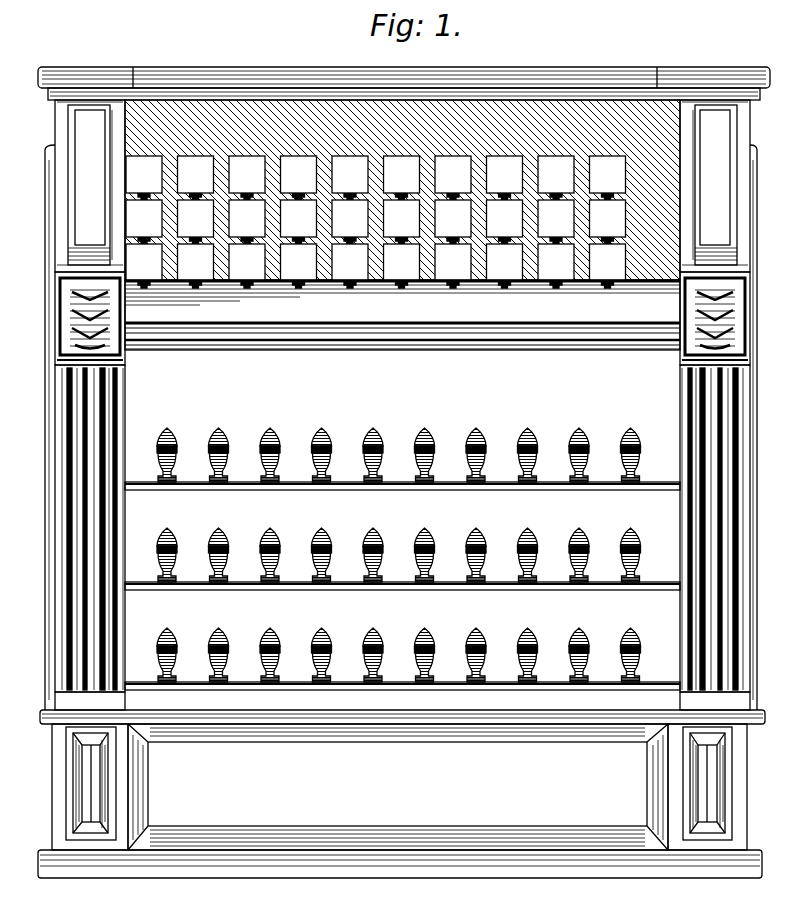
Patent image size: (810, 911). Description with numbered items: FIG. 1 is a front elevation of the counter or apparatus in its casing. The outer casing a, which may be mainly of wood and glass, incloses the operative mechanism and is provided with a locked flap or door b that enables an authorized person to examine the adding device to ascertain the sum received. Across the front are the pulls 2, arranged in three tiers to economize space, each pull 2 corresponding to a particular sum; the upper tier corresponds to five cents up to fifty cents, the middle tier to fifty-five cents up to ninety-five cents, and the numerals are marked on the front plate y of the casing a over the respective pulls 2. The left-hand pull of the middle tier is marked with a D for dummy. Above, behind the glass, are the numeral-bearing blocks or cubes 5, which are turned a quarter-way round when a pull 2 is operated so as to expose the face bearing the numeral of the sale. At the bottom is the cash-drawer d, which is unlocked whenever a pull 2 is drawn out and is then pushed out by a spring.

The outer casing a is at (46, 512).
The locked flap or door b is at (402, 315).
The cash-drawer d is at (398, 787).
The front plate y is at (402, 531).
The pull 2 is at (399, 556).
The numeral-bearing block or cube 5 is at (376, 222).